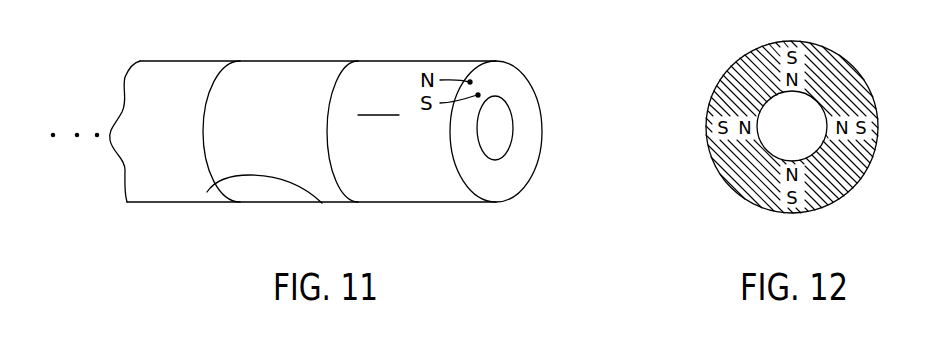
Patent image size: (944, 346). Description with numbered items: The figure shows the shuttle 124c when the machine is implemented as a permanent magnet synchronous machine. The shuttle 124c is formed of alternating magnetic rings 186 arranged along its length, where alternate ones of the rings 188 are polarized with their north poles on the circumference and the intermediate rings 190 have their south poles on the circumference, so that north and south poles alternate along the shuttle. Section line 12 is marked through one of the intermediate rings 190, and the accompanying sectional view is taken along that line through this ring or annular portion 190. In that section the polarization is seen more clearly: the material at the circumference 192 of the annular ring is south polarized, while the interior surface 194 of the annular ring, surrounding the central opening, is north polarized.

In FIG. 11, the shuttle 124c is at (123, 70).
In FIG. 11, the section line 12 is at (292, 53).
In FIG. 11, the alternating magnetic rings 186 is at (362, 182).
In FIG. 11, the alternate magnetic rings 188 is at (140, 115).
In FIG. 11, the intermediate magnetic rings 190 is at (282, 115).
In FIG. 11, the circumference 192 is at (517, 68).
In FIG. 12, the circumference 192 is at (738, 63).
In FIG. 12, the interior surface 194 is at (763, 115).